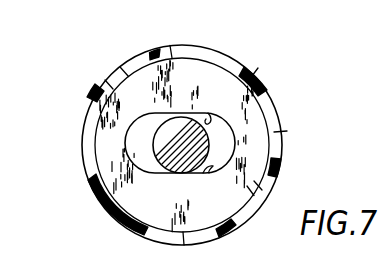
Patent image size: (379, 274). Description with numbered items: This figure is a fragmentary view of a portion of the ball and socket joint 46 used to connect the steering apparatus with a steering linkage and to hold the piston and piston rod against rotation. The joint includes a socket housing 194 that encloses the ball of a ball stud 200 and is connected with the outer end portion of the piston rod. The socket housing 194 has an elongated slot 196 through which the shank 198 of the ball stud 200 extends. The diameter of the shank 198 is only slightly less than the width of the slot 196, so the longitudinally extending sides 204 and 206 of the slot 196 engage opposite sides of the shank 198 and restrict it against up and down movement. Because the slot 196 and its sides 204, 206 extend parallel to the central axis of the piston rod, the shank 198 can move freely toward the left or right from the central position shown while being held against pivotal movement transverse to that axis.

The ball and socket joint 46 is at (268, 88).
The socket housing 194 is at (268, 187).
The elongated slot 196 is at (222, 138).
The shank 198 is at (176, 173).
The ball stud 200 is at (146, 130).
The longitudinally extending side of the slot 204 is at (209, 164).
The longitudinally extending side of the slot 206 is at (208, 113).